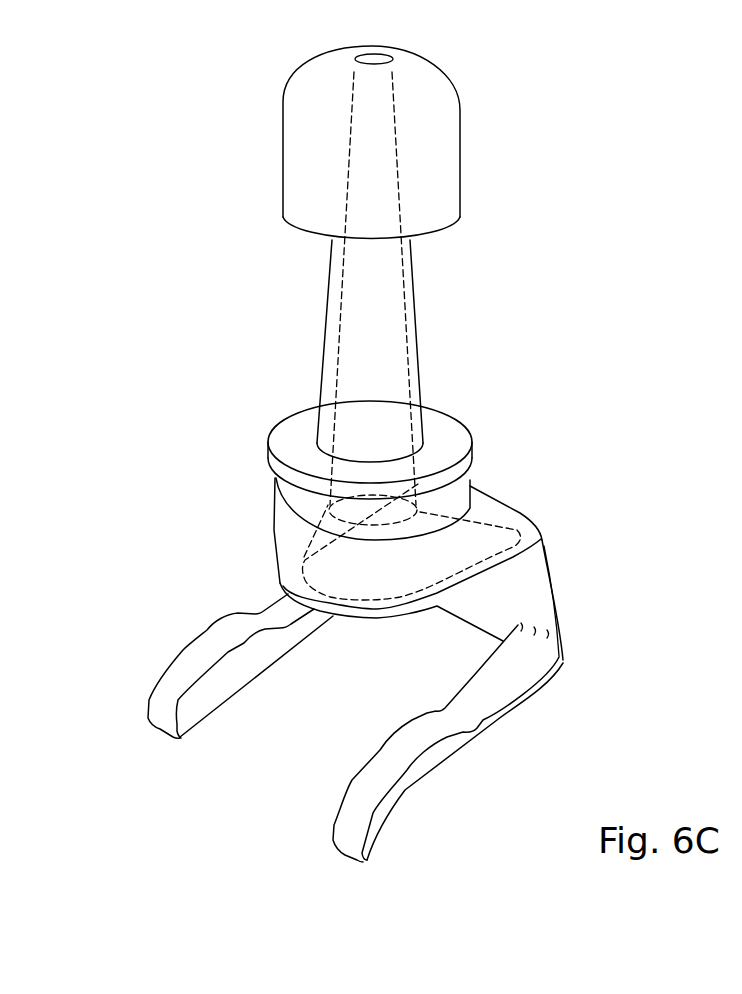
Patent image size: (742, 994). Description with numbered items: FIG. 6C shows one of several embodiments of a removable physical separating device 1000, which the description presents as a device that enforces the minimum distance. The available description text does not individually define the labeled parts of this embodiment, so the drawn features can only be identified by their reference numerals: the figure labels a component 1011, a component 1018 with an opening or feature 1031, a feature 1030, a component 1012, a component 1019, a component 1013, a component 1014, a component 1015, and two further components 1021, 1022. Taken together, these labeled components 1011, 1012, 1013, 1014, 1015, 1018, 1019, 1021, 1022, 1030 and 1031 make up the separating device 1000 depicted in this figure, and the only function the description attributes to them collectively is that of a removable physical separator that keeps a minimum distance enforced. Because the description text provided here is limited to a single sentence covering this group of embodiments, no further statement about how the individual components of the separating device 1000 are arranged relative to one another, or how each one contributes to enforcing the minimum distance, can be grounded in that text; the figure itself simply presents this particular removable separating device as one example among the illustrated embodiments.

The probe assembly 1000 is at (150, 174).
The tapered shaft 1011 is at (416, 334).
The dome-shaped cap 1018 is at (442, 147).
The top opening 1031 is at (395, 50).
The internal channel 1030 is at (338, 332).
The disk flange 1012 is at (473, 453).
The collar 1019 is at (280, 488).
The base ring edge 1013 is at (500, 485).
The base plate 1014 is at (532, 533).
The side wall 1015 is at (561, 608).
The first leg 1021 is at (518, 698).
The second leg 1022 is at (420, 780).